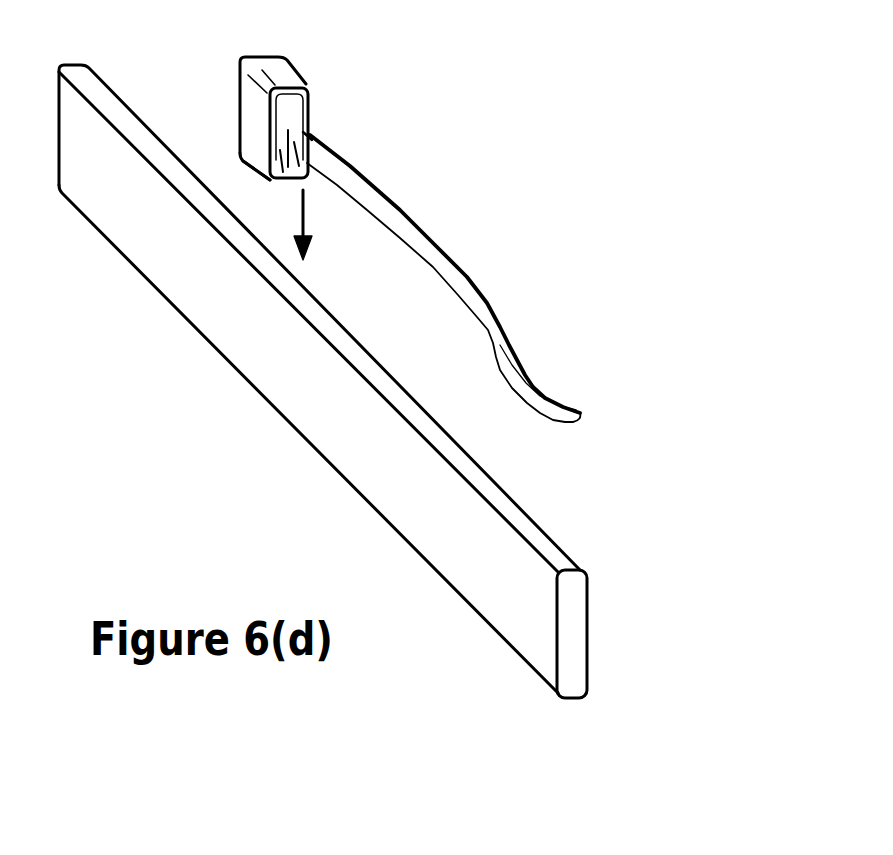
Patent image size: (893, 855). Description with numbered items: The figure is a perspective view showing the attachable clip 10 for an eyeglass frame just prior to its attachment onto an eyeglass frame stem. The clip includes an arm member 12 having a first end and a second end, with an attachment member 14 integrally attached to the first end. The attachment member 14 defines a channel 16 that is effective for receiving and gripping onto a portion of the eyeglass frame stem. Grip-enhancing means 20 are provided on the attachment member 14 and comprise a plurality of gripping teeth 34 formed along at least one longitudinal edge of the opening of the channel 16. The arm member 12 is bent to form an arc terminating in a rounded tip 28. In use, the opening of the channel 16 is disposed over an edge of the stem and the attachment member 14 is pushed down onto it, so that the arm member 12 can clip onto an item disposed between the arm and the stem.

The attachable clip 10 is at (474, 160).
The arm member 12 is at (473, 322).
The attachment member 14 is at (257, 112).
The channel 16 is at (283, 180).
The grip-enhancing means 20 is at (310, 133).
The rounded tip 28 is at (235, 309).
The gripping teeth 34 is at (270, 182).